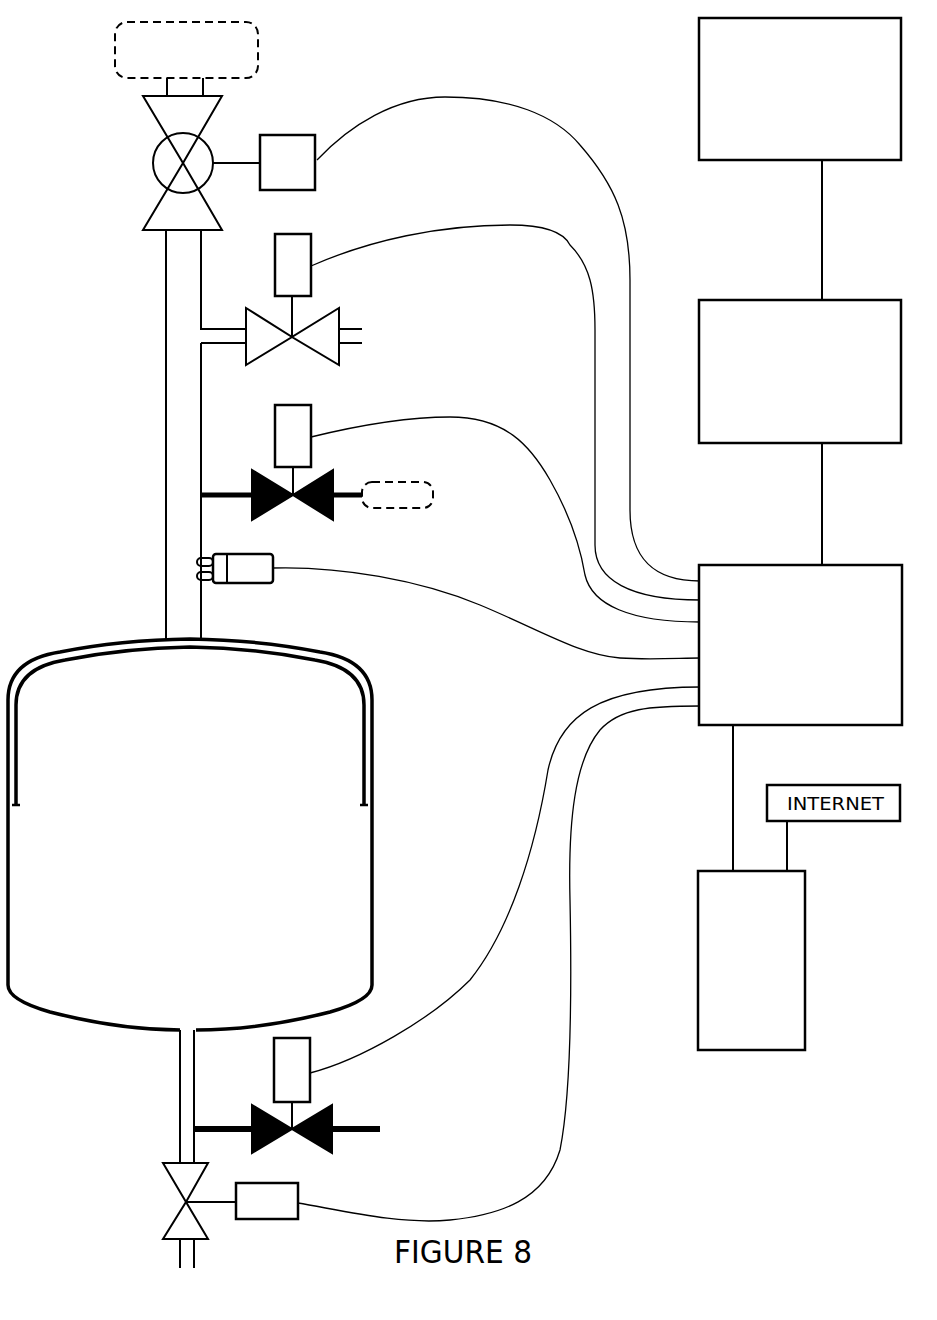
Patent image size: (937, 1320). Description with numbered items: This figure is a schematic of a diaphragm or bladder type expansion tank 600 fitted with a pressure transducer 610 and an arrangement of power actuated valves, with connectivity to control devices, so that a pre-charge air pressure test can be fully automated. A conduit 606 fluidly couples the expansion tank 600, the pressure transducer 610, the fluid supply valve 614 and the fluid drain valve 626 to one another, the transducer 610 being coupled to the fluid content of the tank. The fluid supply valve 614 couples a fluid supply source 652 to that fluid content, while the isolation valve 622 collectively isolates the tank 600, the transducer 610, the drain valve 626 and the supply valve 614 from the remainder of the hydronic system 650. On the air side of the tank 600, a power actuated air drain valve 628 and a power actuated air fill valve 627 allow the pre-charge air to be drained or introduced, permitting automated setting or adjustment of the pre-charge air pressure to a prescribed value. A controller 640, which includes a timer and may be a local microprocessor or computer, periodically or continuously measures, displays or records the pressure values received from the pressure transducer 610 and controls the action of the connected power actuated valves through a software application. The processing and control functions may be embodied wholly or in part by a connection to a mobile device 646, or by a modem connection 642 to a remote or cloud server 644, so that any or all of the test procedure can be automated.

The expansion tank 600 is at (120, 642).
The conduit 606 is at (163, 448).
The pressure transducer 610 is at (240, 587).
The fluid supply valve 614 is at (275, 507).
The isolation valve 622 is at (153, 152).
The fluid drain valve 626 is at (340, 317).
The power actuated air fill valve 627 is at (334, 1117).
The power actuated air drain valve 628 is at (177, 1218).
The controller 640 is at (715, 725).
The modem connection 642 is at (767, 299).
The remote or cloud server 644 is at (763, 163).
The mobile device 646 is at (715, 869).
The hydronic system 650 is at (113, 52).
The fluid supply source 652 is at (393, 480).